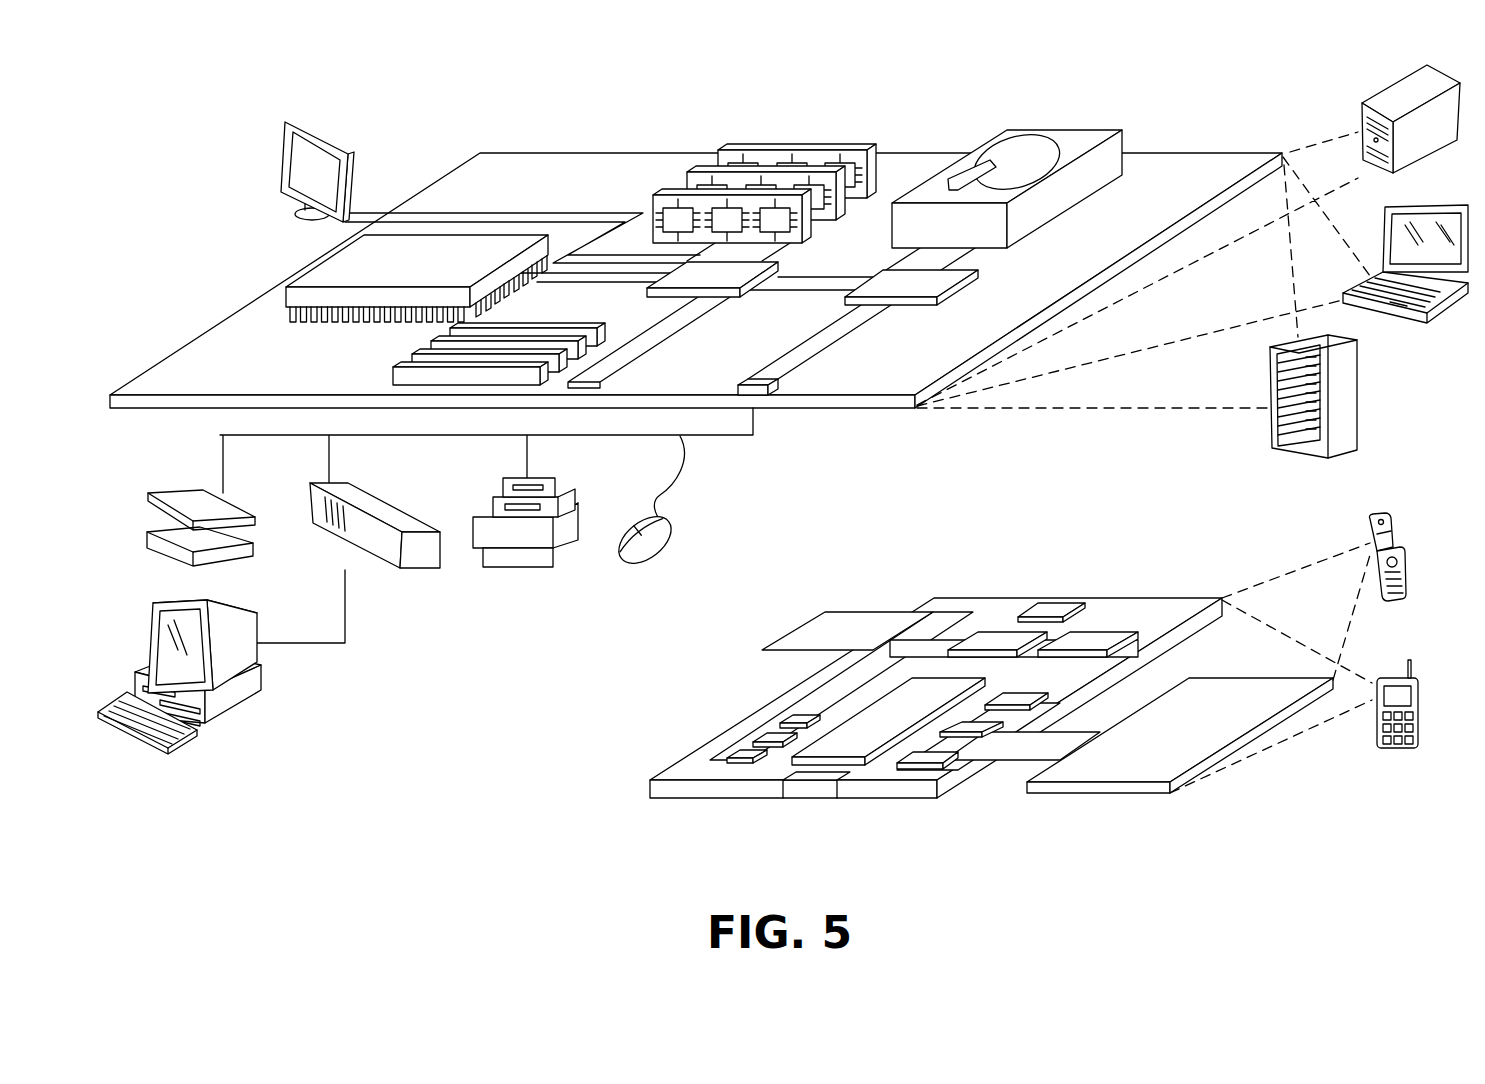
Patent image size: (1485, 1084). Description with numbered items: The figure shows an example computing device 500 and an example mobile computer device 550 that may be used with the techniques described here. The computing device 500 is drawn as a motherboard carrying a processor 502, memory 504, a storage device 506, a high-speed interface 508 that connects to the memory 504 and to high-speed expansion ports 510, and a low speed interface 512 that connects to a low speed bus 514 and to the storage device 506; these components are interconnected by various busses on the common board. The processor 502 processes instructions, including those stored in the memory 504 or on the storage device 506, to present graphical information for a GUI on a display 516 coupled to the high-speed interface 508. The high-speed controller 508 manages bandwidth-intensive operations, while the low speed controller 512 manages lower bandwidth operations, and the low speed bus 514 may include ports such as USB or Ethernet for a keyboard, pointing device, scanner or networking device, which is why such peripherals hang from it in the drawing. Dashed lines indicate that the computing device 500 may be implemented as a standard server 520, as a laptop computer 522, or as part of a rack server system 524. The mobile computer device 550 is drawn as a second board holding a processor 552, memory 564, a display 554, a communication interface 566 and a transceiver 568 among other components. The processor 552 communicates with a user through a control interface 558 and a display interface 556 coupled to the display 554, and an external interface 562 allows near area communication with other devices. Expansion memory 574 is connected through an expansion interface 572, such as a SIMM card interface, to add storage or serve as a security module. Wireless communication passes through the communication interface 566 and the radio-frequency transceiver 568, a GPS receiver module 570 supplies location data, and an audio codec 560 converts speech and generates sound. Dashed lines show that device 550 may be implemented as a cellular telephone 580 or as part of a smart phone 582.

The computing device 500 is at (428, 98).
The processor 502 is at (315, 262).
The memory 504 is at (800, 150).
The storage device 506 is at (1052, 128).
The high-speed interface 508 is at (727, 272).
The high-speed expansion ports 510 is at (417, 348).
The low speed interface 512 is at (882, 285).
The low speed bus 514 is at (758, 382).
The display 516 is at (290, 122).
The standard server 520 is at (1385, 98).
The laptop computer 522 is at (1444, 208).
The rack server system 524 is at (1355, 396).
The mobile computer device 550 is at (603, 812).
The processor 552 is at (852, 728).
The display 554 is at (1222, 692).
The display interface 556 is at (950, 770).
The control interface 558 is at (985, 725).
The audio codec 560 is at (1023, 690).
The external interface 562 is at (810, 790).
The memory 564 is at (758, 732).
The communication interface 566 is at (997, 632).
The transceiver 568 is at (1098, 632).
The GPS receiver module 570 is at (1054, 608).
The expansion interface 572 is at (915, 612).
The expansion memory 574 is at (826, 610).
The cellular telephone 580 is at (1383, 518).
The smart phone 582 is at (1392, 675).